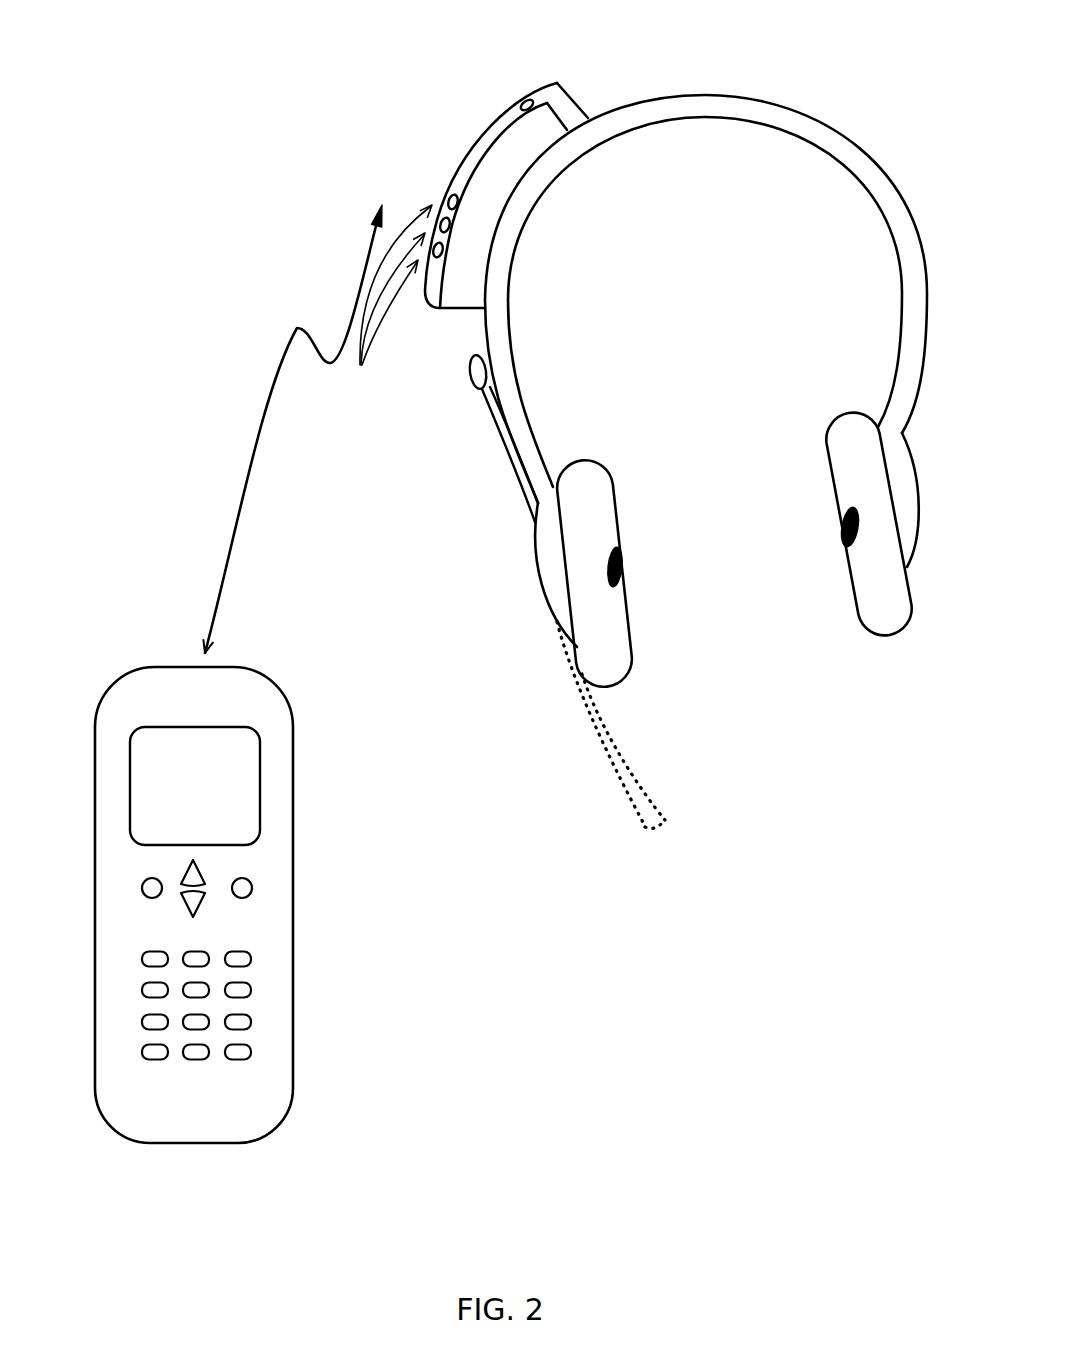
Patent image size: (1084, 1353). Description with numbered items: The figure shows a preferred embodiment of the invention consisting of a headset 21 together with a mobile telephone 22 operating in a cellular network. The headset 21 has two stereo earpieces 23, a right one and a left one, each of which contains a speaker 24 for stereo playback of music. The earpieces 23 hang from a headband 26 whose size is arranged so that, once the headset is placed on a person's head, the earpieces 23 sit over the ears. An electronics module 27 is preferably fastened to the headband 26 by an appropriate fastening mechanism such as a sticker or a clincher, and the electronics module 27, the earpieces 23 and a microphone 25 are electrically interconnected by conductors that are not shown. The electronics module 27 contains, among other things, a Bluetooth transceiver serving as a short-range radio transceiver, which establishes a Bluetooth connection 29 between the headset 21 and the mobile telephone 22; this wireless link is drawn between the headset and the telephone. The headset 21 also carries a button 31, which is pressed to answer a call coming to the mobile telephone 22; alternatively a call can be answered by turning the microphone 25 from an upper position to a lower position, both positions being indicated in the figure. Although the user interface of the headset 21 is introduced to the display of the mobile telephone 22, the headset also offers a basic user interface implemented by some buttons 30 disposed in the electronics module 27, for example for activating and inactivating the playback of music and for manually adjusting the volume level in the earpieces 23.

The headset 21 is at (881, 107).
The mobile telephone 22 is at (41, 730).
The stereo earpieces 23 is at (890, 640).
The speaker 24 is at (622, 567).
The microphone 25 is at (466, 379).
The headband 26 is at (723, 93).
The electronics module 27 is at (467, 202).
The Bluetooth connection 29 is at (292, 429).
The buttons 30 is at (401, 299).
The button 31 is at (523, 90).